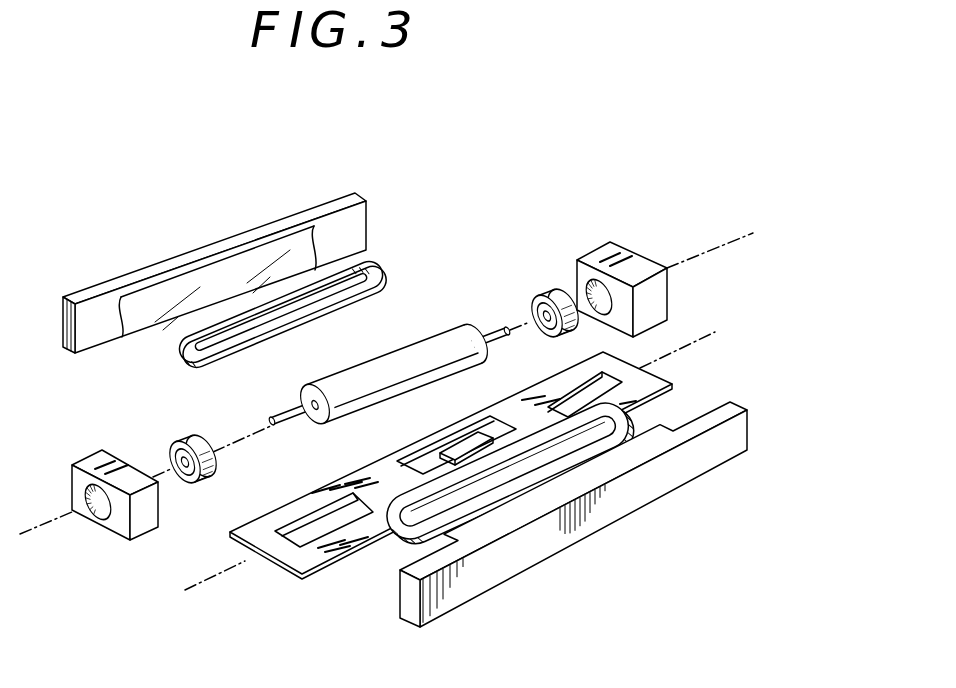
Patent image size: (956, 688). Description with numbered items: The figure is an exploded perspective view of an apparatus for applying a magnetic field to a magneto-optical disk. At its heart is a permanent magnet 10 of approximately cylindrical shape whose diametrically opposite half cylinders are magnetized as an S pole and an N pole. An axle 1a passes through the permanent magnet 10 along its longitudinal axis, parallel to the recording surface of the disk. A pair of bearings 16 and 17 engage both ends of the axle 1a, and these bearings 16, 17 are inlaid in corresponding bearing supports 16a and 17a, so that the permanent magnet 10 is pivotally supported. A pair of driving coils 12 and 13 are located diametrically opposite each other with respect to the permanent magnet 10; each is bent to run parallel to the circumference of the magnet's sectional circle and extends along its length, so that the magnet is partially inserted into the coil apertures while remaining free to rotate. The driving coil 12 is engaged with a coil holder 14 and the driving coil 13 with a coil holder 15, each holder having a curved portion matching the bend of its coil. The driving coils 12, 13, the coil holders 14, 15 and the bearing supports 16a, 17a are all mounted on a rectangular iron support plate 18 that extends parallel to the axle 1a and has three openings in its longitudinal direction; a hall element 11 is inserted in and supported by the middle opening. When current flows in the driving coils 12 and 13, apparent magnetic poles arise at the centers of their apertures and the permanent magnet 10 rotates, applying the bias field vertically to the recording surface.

The axle 1a is at (290, 425).
The permanent magnet 10 is at (428, 333).
The hall element 11 is at (480, 412).
The driving coil 12 is at (240, 360).
The driving coil 13 is at (660, 420).
The coil holder 14 is at (288, 220).
The coil holder 15 is at (645, 488).
The bearing 16 is at (553, 290).
The bearing support 16a is at (618, 253).
The bearing 17 is at (180, 445).
The bearing support 17a is at (113, 523).
The support plate 18 is at (287, 572).